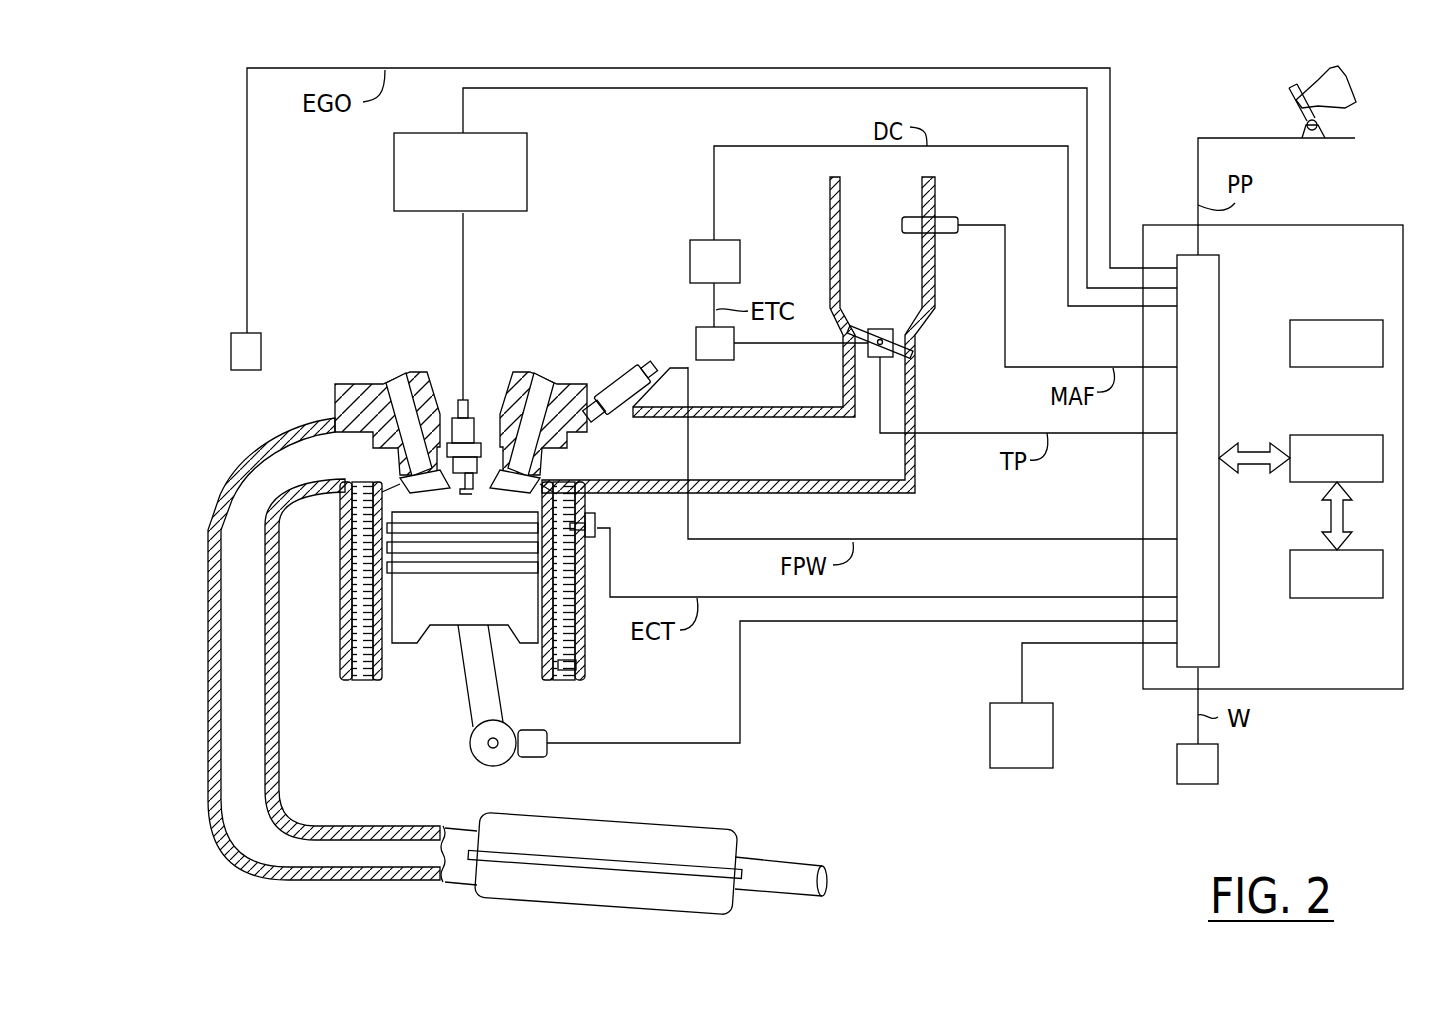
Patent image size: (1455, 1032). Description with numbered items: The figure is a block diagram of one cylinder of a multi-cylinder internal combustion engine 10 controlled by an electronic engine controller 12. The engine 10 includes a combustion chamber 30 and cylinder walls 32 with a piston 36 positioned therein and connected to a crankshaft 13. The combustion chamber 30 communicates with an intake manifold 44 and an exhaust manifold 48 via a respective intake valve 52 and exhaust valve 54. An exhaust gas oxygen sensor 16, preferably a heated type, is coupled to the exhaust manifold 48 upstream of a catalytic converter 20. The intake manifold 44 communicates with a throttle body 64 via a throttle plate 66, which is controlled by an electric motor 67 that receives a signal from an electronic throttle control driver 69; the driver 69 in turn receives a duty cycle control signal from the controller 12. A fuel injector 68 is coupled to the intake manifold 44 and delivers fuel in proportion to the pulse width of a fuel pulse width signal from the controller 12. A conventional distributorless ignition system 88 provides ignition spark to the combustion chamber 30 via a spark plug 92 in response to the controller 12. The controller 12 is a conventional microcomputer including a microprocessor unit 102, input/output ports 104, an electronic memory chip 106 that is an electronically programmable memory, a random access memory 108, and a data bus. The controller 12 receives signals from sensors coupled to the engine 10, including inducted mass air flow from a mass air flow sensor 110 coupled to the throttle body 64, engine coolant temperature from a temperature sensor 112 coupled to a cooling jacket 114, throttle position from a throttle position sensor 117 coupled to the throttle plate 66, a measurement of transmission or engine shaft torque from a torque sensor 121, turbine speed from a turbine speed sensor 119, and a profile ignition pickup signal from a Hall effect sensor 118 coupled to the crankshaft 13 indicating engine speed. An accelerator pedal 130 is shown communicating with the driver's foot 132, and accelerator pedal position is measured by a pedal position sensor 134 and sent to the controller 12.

The internal combustion engine 10 is at (487, 516).
The electronic engine controller 12 is at (1363, 690).
The crankshaft 13 is at (480, 757).
The exhaust gas oxygen sensor 16 is at (232, 350).
The catalytic converter 20 is at (702, 827).
The combustion chamber 30 is at (440, 503).
The cylinder walls 32 is at (388, 662).
The piston 36 is at (458, 645).
The intake manifold 44 is at (814, 465).
The exhaust manifold 48 is at (235, 488).
The intake valve 52 is at (525, 468).
The exhaust valve 54 is at (407, 463).
The throttle body 64 is at (863, 245).
The throttle plate 66 is at (860, 338).
The electric motor 67 is at (697, 340).
The fuel injector 68 is at (628, 382).
The ETC driver 69 is at (690, 253).
The distributorless ignition system 88 is at (528, 178).
The spark plug 92 is at (470, 398).
The microprocessor unit 102 is at (1333, 434).
The input/output ports 104 is at (1220, 300).
The electronic memory chip 106 is at (1340, 318).
The random access memory 108 is at (1333, 600).
The mass air flow sensor 110 is at (903, 224).
The temperature sensor 112 is at (596, 526).
The cooling jacket 114 is at (570, 666).
The throttle position sensor 117 is at (908, 335).
The Hall effect sensor 118 is at (535, 760).
The turbine speed sensor 119 is at (1198, 783).
The torque sensor 121 is at (990, 737).
The accelerator pedal 130 is at (1290, 103).
The driver's foot 132 is at (1353, 95).
The pedal position sensor 134 is at (1353, 132).